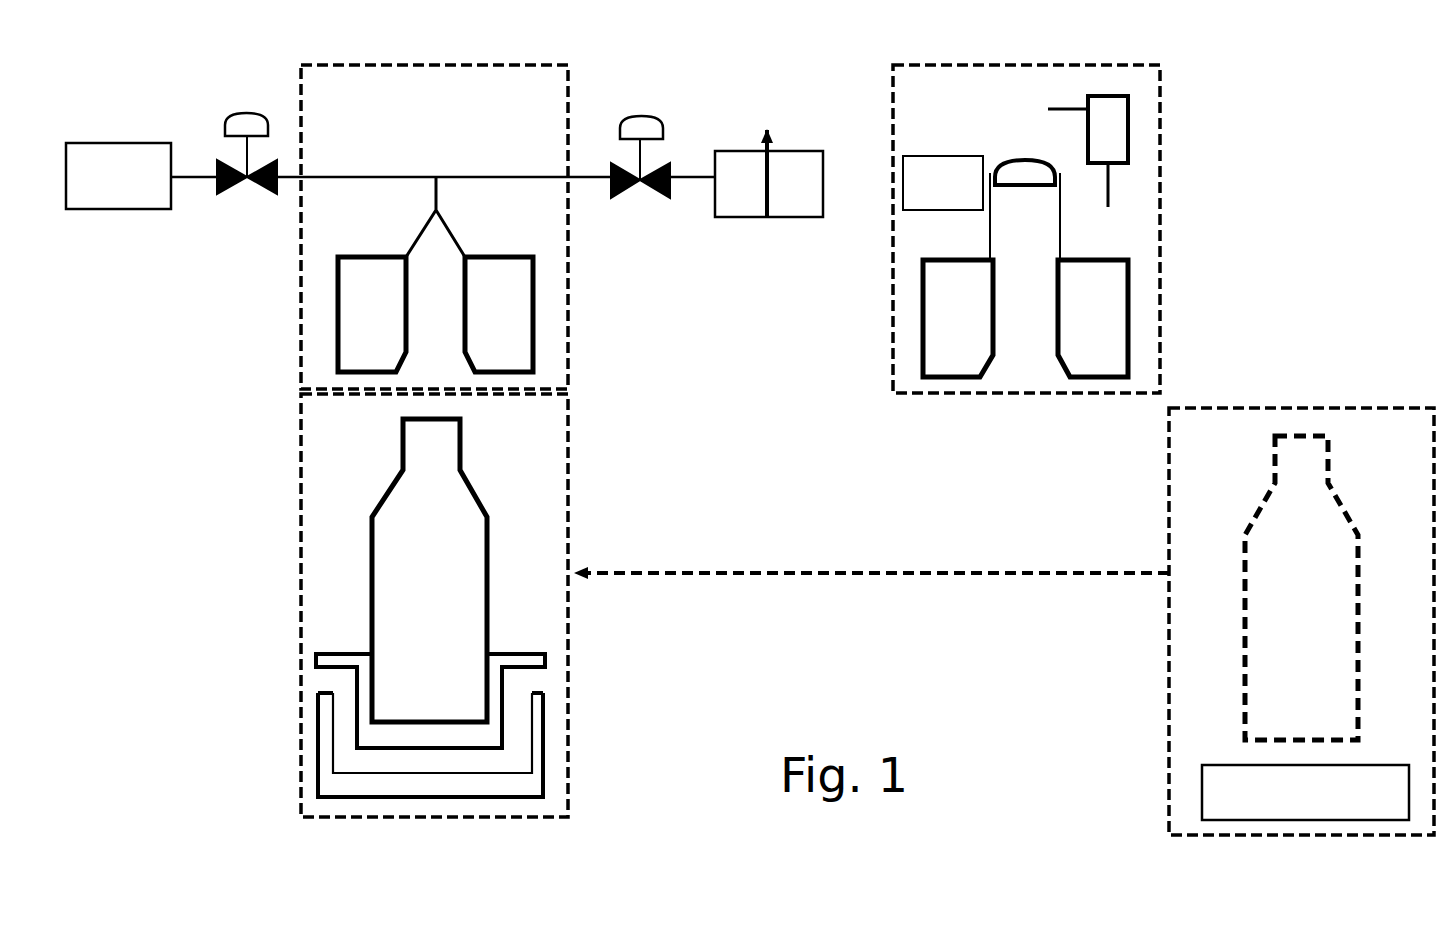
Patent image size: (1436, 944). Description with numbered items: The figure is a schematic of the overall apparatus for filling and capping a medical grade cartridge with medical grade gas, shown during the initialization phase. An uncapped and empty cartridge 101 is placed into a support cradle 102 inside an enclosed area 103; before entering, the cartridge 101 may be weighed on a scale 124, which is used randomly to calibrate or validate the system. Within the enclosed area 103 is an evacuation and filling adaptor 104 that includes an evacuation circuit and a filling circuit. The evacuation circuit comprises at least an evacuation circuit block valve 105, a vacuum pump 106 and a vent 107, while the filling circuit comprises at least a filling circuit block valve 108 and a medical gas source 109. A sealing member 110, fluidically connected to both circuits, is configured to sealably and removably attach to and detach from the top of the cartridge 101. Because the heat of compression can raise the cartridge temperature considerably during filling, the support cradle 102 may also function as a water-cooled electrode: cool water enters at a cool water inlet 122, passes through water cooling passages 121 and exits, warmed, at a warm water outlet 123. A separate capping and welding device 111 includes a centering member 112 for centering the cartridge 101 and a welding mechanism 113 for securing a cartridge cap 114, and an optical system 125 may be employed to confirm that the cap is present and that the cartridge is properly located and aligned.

The cartridge 101 is at (865, 579).
The support cradle 102 is at (336, 781).
The enclosed area 103 is at (574, 298).
The evacuation and filling adaptor 104 is at (443, 193).
The evacuation circuit block valve 105 is at (640, 177).
The vacuum pump 106 is at (769, 184).
The vent 107 is at (767, 153).
The filling circuit block valve 108 is at (247, 175).
The medical gas source 109 is at (118, 176).
The sealing member 110 is at (336, 329).
The capping and welding device 111 is at (1032, 394).
The centering member 112 is at (1132, 347).
The welding mechanism 113 is at (1132, 142).
The cartridge cap 114 is at (1025, 210).
The water cooling passage 121 is at (510, 758).
The cool water inlet 122 is at (322, 680).
The warm water outlet 123 is at (542, 680).
The scale 124 is at (1004, 621).
The optical system 125 is at (943, 183).